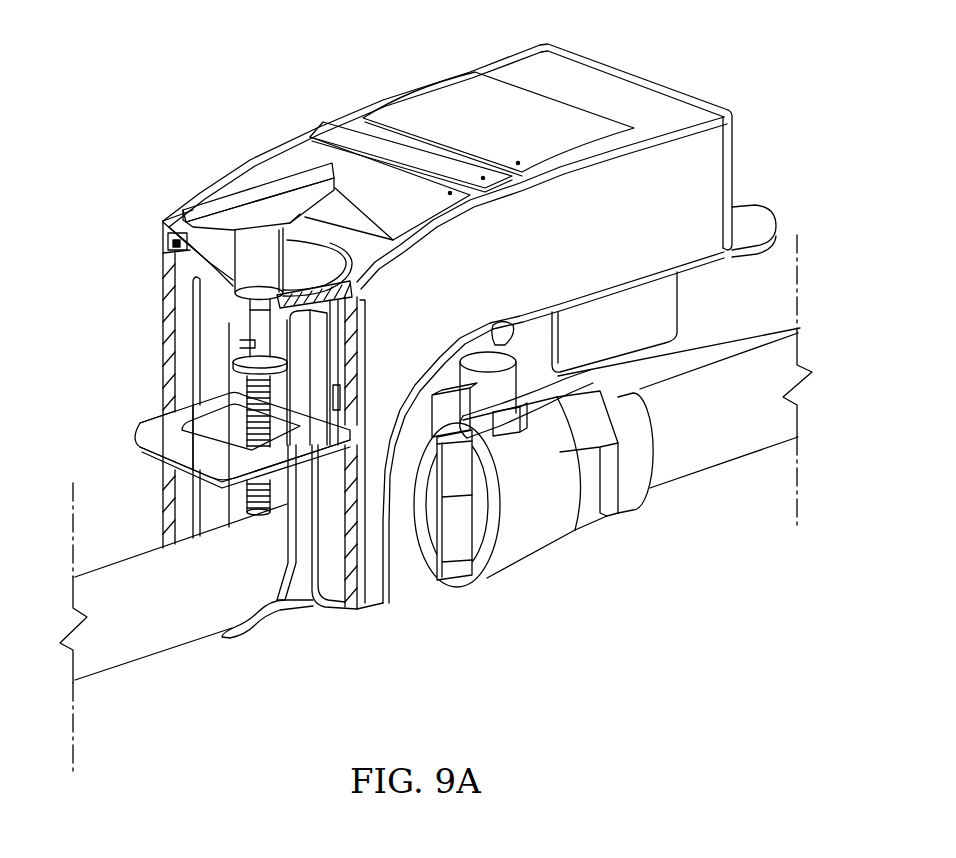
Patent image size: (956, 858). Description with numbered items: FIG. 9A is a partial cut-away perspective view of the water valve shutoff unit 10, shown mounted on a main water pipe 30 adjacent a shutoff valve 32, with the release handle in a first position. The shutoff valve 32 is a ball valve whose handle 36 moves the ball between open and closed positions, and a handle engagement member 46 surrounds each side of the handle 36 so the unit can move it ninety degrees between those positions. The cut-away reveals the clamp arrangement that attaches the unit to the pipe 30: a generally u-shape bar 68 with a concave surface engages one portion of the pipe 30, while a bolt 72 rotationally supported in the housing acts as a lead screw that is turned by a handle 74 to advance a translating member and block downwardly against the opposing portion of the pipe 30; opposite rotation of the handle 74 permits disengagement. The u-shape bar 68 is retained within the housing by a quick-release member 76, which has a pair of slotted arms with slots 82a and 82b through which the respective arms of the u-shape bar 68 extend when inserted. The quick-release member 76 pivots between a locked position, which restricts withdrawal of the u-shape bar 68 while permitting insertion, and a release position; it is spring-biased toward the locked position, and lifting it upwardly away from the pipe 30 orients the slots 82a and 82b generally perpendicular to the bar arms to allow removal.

The flow control system 10 is at (173, 45).
The main water pipe 30 is at (150, 637).
The shutoff valve 32 is at (570, 580).
The handle 36 is at (762, 212).
The handle engagement member 46 is at (670, 294).
The u-shape bar 68 is at (290, 600).
The bolt 72 is at (246, 420).
The handle 74 is at (258, 205).
The quick-release member 76 is at (140, 438).
The slot 82a is at (157, 421).
The slot 82b is at (322, 390).